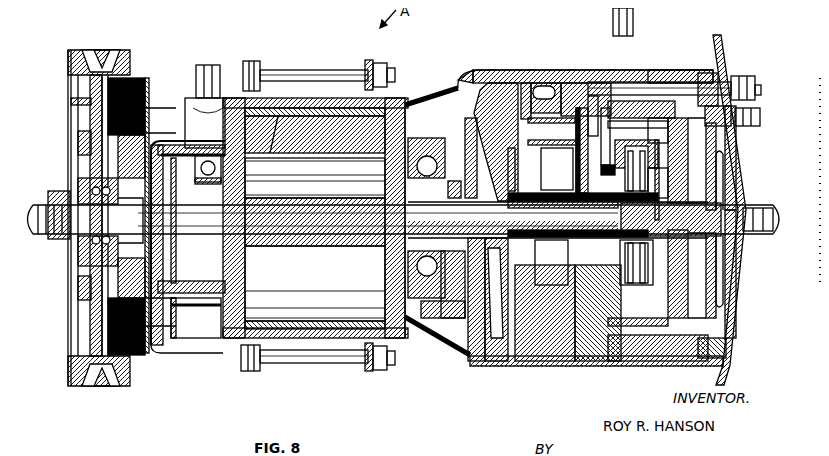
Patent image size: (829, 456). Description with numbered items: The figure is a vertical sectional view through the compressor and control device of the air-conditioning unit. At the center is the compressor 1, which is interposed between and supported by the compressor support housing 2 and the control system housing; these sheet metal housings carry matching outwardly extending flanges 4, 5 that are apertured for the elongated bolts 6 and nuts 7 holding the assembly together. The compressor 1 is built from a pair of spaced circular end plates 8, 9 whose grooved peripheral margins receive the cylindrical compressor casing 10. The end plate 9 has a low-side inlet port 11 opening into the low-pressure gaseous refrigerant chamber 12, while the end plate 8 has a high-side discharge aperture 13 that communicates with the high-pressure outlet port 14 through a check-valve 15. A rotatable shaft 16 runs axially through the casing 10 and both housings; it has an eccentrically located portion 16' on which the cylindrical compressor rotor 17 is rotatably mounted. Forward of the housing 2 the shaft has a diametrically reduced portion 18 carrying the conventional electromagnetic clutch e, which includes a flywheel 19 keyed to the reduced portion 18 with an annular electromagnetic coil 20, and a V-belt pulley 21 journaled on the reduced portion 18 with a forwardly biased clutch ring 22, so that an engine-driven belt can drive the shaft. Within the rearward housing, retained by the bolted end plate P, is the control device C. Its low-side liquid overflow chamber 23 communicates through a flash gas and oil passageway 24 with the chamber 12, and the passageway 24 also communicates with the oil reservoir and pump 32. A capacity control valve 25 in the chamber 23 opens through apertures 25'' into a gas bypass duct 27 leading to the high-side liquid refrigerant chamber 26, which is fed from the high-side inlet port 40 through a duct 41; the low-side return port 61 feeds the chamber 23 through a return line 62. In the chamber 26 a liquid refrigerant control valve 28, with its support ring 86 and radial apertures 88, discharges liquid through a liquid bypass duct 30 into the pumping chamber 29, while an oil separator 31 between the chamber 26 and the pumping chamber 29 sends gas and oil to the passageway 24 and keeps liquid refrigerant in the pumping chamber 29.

The compressor 1 is at (296, 100).
The compressor support housing 2 is at (180, 90).
The flange 4 is at (255, 90).
The flange 5 is at (362, 62).
The elongated bolt 6 is at (340, 65).
The nut 7 is at (375, 55).
The end plate 8 is at (180, 325).
The end plate 9 is at (392, 335).
The compressor casing 10 is at (330, 330).
The low-side inlet port 11 is at (403, 92).
The low-pressure gaseous refrigerant chamber 12 is at (438, 95).
The high-side discharge aperture 13 is at (225, 90).
The high-pressure outlet port 14 is at (200, 60).
The check-valve 15 is at (200, 115).
The rotatable shaft 16 is at (414, 292).
The eccentrically located portion 16' is at (315, 93).
The compressor rotor 17 is at (305, 240).
The diametrically reduced portion 18 is at (90, 255).
The flywheel 19 is at (135, 345).
The electromagnetic coil 20 is at (128, 345).
The V-belt pulley 21 is at (90, 365).
The clutch ring 22 is at (85, 124).
The low-side liquid overflow chamber 23 is at (510, 130).
The flash gas and oil passageway 24 is at (560, 75).
The capacity control valve 25 is at (576, 255).
The apertures 25'' is at (586, 153).
The high-side liquid refrigerant chamber 26 is at (600, 250).
The gas bypass duct 27 is at (560, 260).
The liquid refrigerant control valve 28 is at (660, 168).
The pumping chamber 29 is at (695, 296).
The liquid bypass duct 30 is at (680, 240).
The oil separator 31 is at (680, 182).
The oil reservoir and pump 32 is at (462, 350).
The high-side inlet port 40 is at (742, 68).
The duct 41 is at (625, 78).
The port 61 is at (752, 90).
The return line 62 is at (540, 78).
The support ring 86 is at (628, 260).
The radial apertures 88 is at (630, 265).
The control device C is at (668, 62).
The end plate P is at (720, 153).
The electromagnetic clutch e is at (140, 70).